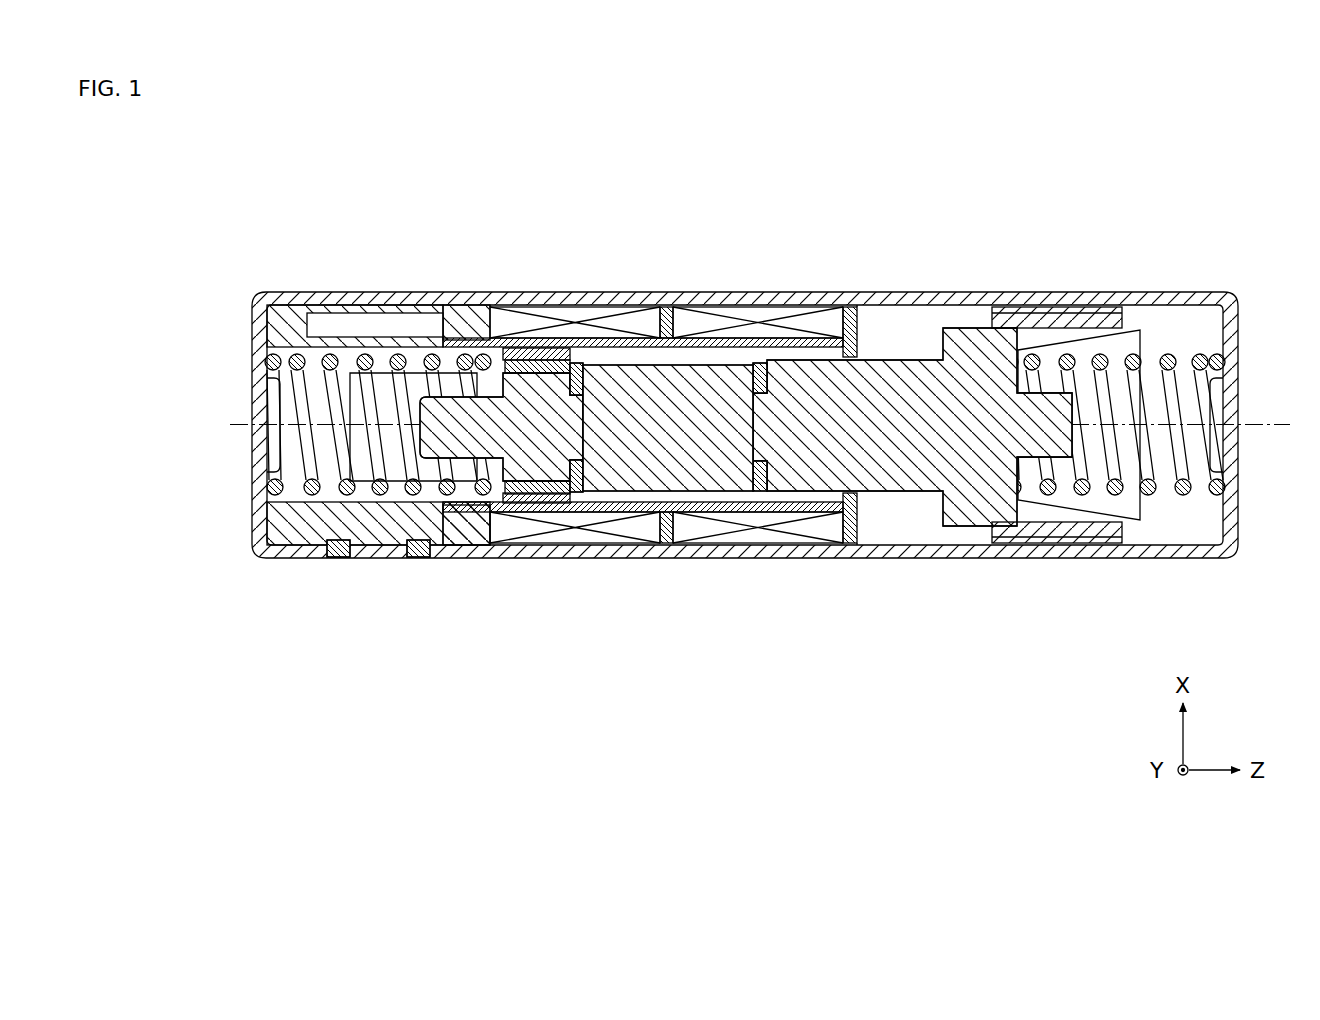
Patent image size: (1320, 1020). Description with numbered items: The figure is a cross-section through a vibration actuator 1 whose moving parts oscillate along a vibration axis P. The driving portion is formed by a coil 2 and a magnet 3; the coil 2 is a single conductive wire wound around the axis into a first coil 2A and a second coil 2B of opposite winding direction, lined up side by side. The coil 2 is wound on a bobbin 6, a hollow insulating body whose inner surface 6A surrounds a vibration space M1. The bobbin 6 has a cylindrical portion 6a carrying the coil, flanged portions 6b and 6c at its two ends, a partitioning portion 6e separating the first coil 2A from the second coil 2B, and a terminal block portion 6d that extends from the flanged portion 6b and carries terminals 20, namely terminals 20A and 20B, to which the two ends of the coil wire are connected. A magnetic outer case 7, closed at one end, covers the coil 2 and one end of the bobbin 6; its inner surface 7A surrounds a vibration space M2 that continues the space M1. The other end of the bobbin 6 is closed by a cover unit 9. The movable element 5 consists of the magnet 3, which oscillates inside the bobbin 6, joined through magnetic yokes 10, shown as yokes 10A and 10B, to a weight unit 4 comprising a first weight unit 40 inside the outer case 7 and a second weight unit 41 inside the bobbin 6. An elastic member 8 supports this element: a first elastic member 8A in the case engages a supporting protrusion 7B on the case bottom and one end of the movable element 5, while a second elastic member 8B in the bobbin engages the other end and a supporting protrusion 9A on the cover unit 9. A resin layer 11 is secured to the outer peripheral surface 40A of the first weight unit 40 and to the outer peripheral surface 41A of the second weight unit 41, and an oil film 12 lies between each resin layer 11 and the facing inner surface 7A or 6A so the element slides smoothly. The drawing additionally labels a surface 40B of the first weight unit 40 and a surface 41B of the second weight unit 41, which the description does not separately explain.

The vibration actuator 1 is at (1141, 171).
The coil 2 is at (673, 365).
The first coil 2A is at (790, 306).
The second coil 2B is at (606, 306).
The magnet 3 is at (684, 364).
The weight unit 4 is at (769, 438).
The first weight unit 40 is at (893, 493).
The outer peripheral surface 40A is at (968, 528).
The shaft bearing portion 40B is at (1093, 544).
The second weight unit 41 is at (500, 438).
The outer peripheral surface 41A is at (473, 345).
The second flange of shaft portion 41 41B is at (441, 472).
The movable element 5 is at (906, 332).
The bobbin 6 is at (404, 302).
The inner surface 6A is at (636, 338).
The cylindrical portion 6a is at (840, 302).
The flanged portion 6b is at (289, 314).
The flanged portion 6c is at (888, 302).
The terminal block portion 6d is at (385, 546).
The partitioning portion 6e is at (665, 510).
The outer case 7 is at (1057, 306).
The inner surface 7A is at (1142, 318).
The supporting protrusion 7B is at (1214, 343).
The elastic member 8 is at (738, 485).
The first elastic member 8A is at (1146, 497).
The second elastic member 8B is at (311, 497).
The cover unit 9 is at (386, 314).
The supporting protrusion 9A is at (294, 446).
The yokes 10 is at (673, 463).
The yoke 10A is at (780, 528).
The yoke 10B is at (586, 528).
The resin layer 11 is at (556, 348).
The oil film 12 is at (496, 350).
The terminals 20 is at (342, 608).
The terminal 20A is at (420, 558).
The terminal 20B is at (338, 558).
The vibration space M1 is at (348, 358).
The vibration space M2 is at (1168, 326).
The vibration axis P is at (1263, 424).